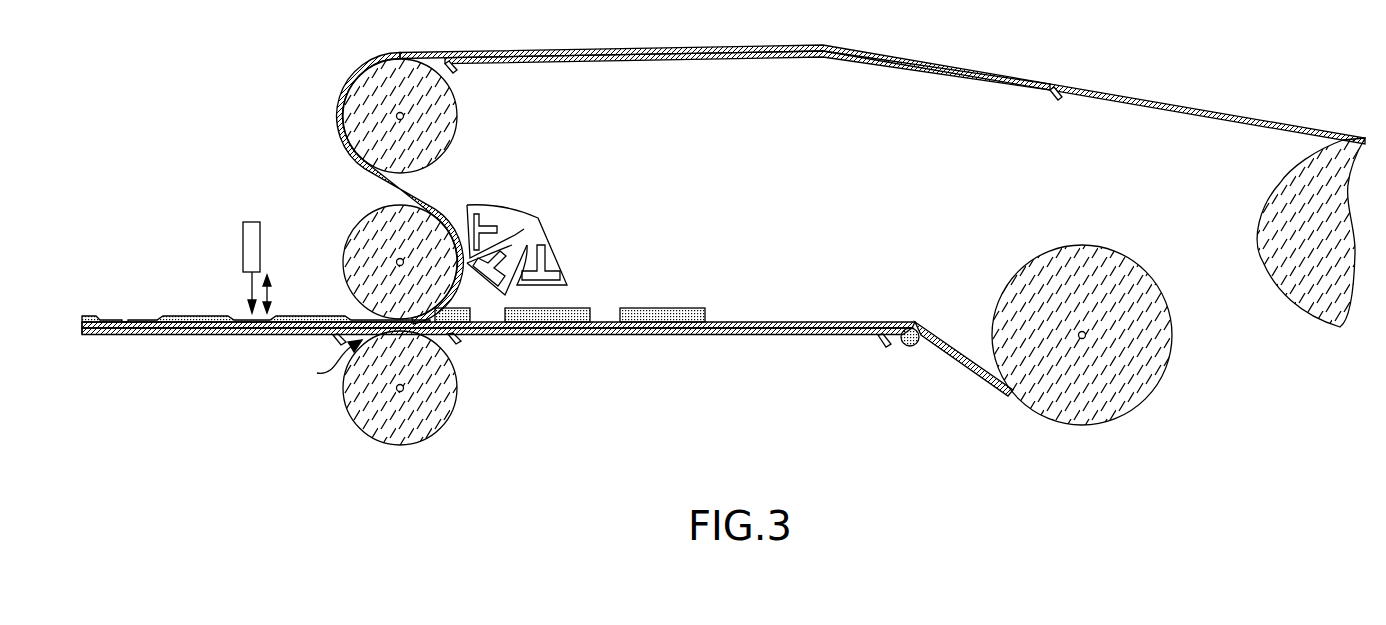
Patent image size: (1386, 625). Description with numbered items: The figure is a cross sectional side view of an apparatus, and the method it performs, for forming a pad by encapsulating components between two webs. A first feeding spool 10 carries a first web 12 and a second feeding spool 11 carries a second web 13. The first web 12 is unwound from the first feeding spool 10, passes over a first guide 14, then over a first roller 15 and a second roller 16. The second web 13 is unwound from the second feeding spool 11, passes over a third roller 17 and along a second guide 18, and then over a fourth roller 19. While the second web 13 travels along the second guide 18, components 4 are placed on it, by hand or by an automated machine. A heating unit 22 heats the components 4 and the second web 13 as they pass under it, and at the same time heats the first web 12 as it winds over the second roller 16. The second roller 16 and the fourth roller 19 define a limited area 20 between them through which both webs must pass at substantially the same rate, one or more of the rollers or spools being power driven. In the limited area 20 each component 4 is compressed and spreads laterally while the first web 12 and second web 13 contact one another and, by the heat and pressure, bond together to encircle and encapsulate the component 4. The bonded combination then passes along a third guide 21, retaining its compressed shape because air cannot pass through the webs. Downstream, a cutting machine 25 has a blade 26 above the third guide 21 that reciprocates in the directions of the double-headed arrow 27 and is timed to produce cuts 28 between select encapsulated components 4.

The component 4 is at (82, 322).
The first feeding spool 10 is at (1279, 186).
The second feeding spool 11 is at (1172, 346).
The first web 12 is at (82, 318).
The second web 13 is at (82, 333).
The first guide 14 is at (567, 60).
The first roller 15 is at (456, 124).
The second roller 16 is at (356, 220).
The third roller 17 is at (914, 348).
The second guide 18 is at (541, 336).
The fourth roller 19 is at (456, 402).
The limited area 20 is at (325, 365).
The third guide 21 is at (82, 337).
The heating unit 22 is at (544, 220).
The cutting machine 25 is at (233, 236).
The blade 26 is at (250, 298).
The double-headed arrow 27 is at (270, 296).
The cuts 28 is at (125, 316).